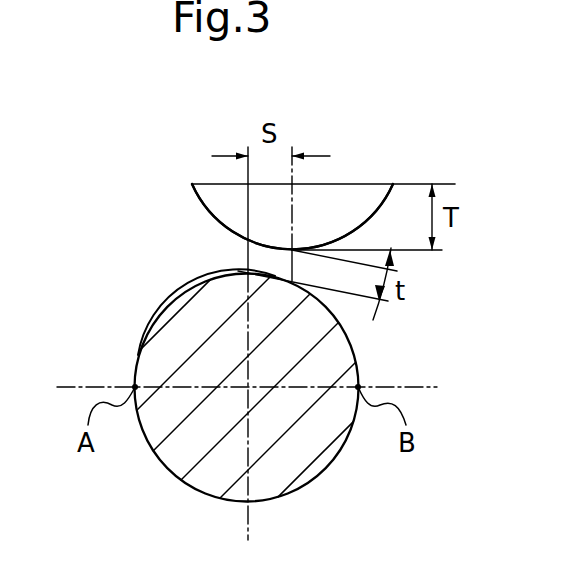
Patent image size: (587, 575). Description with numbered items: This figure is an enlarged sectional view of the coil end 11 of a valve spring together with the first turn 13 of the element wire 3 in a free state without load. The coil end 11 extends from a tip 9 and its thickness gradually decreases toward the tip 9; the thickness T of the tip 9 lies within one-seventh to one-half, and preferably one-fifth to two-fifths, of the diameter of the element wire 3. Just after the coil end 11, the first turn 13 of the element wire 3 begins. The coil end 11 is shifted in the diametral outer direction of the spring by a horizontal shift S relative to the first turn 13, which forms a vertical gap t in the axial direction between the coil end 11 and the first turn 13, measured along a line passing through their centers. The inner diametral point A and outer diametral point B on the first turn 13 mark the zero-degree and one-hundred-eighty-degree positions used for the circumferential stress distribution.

The element wire 3 is at (177, 460).
The tip 9 is at (360, 192).
The coil end 11 is at (207, 212).
The first turn 13 is at (142, 344).